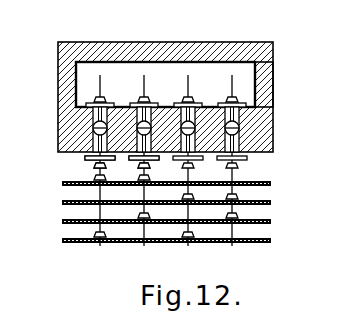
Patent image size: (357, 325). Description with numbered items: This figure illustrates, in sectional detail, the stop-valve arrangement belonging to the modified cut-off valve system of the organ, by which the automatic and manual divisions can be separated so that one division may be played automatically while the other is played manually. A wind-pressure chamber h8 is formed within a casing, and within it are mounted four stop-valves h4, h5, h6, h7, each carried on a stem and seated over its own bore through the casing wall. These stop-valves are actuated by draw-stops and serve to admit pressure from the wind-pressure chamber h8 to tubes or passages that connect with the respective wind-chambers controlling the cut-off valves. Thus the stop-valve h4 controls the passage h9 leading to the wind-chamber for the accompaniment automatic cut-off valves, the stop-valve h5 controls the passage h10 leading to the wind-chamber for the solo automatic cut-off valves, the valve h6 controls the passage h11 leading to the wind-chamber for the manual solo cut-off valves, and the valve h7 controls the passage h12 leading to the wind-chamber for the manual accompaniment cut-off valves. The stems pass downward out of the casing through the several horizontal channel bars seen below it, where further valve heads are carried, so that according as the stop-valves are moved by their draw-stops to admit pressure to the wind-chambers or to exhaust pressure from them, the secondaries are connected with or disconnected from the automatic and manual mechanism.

The stop-valve h4 is at (108, 104).
The stop-valve h5 is at (152, 104).
The stop-valve h6 is at (196, 104).
The stop-valve h7 is at (240, 104).
The wind-pressure chamber h8 is at (99, 67).
The passage h9 is at (58, 127).
The passage h10 is at (107, 159).
The passage h11 is at (152, 160).
The passage h12 is at (273, 122).